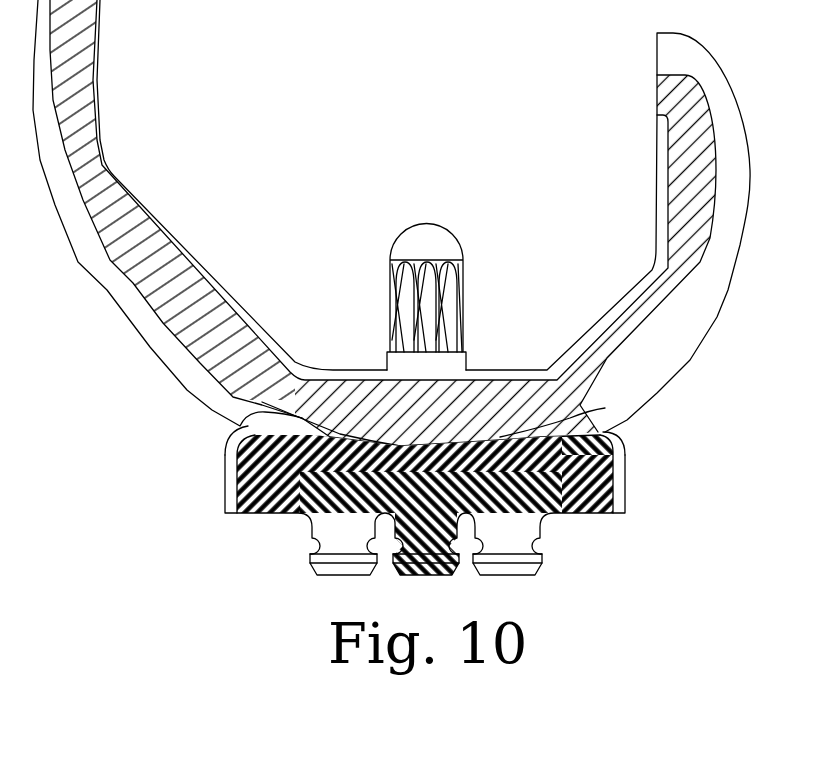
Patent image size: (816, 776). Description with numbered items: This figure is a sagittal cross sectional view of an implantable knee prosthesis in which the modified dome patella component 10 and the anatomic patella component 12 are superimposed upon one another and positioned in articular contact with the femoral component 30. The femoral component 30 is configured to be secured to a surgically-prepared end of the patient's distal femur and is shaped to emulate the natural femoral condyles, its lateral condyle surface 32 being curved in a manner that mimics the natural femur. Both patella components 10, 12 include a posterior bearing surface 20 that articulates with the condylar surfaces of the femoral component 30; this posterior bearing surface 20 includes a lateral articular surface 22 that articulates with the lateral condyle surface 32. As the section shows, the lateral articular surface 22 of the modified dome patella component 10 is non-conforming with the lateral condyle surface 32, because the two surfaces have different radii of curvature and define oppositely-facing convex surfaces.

The modified dome patella component 10 is at (560, 514).
The anatomic patella component 12 is at (444, 503).
The posterior bearing surface 20 is at (542, 427).
The lateral articular surface 22 is at (320, 433).
The femoral component 30 is at (382, 230).
The lateral condyle surface 32 is at (238, 398).